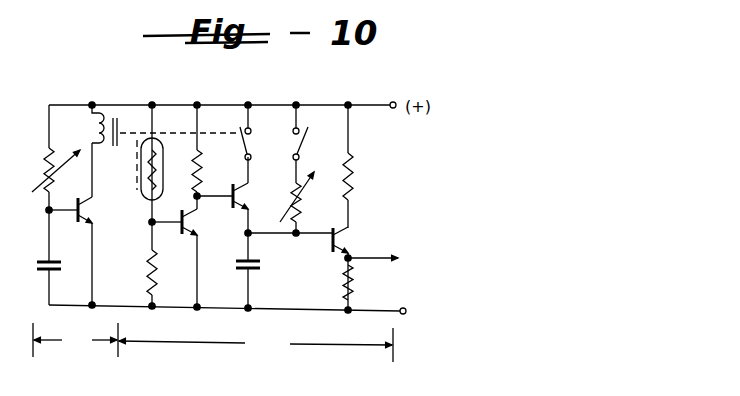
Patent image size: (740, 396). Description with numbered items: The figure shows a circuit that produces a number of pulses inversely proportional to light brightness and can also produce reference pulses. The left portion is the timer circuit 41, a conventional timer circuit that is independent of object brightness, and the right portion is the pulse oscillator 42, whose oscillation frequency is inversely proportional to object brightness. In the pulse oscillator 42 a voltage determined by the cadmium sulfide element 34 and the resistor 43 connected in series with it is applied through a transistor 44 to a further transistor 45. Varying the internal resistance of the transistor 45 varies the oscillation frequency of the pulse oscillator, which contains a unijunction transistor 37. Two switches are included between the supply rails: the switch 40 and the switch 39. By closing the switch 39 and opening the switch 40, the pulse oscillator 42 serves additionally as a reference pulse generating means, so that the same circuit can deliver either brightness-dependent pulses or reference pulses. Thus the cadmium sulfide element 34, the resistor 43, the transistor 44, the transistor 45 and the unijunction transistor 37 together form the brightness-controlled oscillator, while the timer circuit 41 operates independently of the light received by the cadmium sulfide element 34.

The cadmium sulfide element 34 is at (139, 201).
The unijunction transistor 37 is at (350, 242).
The switch 39 is at (306, 147).
The switch 40 is at (246, 141).
The timer circuit 41 is at (75, 340).
The pulse oscillator 42 is at (256, 345).
The resistor 43 is at (147, 266).
The transistor 44 is at (180, 238).
The transistor 45 is at (240, 208).